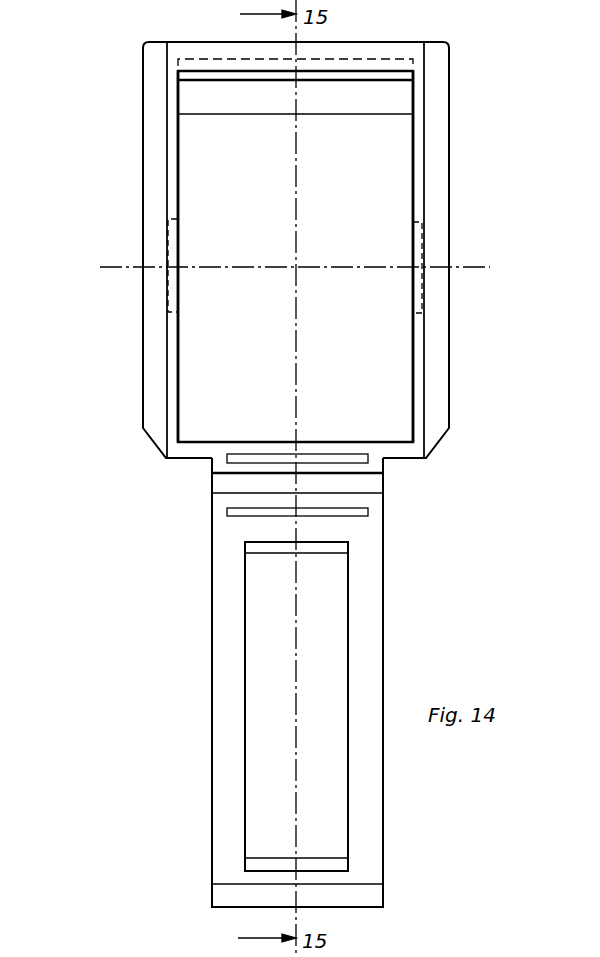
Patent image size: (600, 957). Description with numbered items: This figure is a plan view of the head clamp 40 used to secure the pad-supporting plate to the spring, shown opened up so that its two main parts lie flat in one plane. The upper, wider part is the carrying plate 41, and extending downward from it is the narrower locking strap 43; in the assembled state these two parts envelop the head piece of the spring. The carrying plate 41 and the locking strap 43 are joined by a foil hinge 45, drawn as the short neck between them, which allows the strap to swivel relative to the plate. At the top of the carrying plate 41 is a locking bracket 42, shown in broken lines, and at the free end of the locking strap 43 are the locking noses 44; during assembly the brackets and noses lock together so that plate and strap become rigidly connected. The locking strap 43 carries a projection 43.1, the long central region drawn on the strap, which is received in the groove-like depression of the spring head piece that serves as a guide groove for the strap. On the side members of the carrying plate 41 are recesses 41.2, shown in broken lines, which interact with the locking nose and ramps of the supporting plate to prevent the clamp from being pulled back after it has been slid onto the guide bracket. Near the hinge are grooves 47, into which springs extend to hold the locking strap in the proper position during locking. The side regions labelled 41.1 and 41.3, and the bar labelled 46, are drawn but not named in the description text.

The head clamp 40 is at (130, 395).
The carrying plate 41 is at (363, 186).
The frame side wall 41.1 is at (178, 152).
The recesses 41.2 is at (168, 243).
The housing side wall 41.3 is at (152, 320).
The locking brackets 42 is at (365, 70).
The locking strap 43 is at (384, 604).
The projection 43.1 is at (322, 732).
The locking noses 44 is at (375, 896).
The foil hinge 45 is at (212, 487).
The lower cross bar 46 is at (227, 514).
The grooves 47 is at (266, 457).